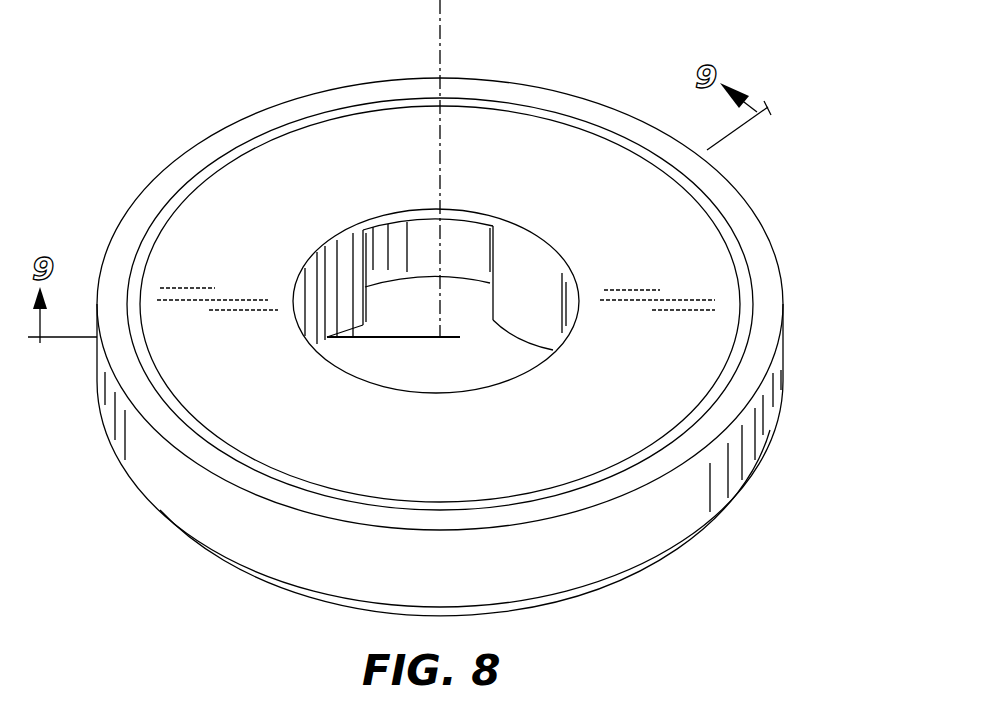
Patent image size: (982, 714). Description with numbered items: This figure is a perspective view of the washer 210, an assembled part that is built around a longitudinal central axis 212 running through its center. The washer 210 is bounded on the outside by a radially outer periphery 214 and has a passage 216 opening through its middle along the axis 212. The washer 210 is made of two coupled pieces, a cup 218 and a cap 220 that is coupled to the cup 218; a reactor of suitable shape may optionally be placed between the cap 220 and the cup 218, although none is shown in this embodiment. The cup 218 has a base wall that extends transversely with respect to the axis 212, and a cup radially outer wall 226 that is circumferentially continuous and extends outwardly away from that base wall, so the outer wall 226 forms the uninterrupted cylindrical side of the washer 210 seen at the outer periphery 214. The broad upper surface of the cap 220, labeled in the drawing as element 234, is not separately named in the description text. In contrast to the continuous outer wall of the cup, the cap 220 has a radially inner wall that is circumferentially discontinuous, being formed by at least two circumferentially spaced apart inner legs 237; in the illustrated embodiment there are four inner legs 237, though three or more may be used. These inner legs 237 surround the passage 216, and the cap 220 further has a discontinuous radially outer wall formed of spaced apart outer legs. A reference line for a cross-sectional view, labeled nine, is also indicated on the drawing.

The washer 210 is at (478, 315).
The longitudinal central axis 212 is at (441, 8).
The radially outer periphery 214 is at (797, 297).
The passage 216 is at (525, 277).
The cup 218 is at (155, 527).
The cap 220 is at (588, 147).
The cup radially outer wall 226 is at (755, 212).
The top face 234 is at (263, 247).
The inner legs 237 is at (343, 262).